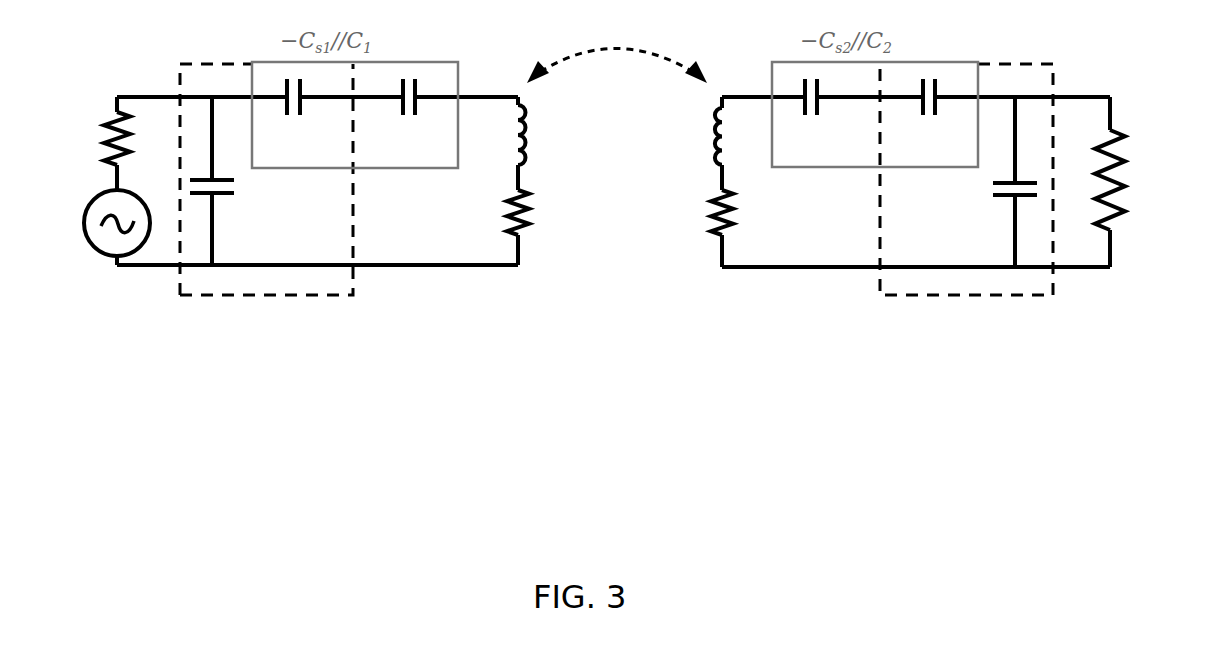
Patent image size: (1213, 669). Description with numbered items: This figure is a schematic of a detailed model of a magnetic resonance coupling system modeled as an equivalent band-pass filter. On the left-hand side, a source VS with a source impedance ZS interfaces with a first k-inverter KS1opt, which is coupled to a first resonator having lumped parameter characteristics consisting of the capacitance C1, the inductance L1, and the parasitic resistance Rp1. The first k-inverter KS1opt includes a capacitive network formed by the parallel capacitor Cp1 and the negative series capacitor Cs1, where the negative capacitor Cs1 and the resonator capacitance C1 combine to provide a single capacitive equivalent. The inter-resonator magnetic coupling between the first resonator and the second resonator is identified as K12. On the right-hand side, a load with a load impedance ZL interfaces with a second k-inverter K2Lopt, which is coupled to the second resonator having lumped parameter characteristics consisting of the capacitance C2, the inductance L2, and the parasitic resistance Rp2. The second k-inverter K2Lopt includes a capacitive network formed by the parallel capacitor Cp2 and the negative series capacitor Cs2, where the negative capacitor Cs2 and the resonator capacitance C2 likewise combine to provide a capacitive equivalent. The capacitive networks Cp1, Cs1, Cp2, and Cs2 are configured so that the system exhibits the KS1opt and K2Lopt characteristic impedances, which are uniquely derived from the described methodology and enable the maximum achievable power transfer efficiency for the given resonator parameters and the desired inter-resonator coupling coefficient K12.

The source impedance ZS is at (81, 140).
The source VS is at (89, 223).
The capacitor Cp1 of the first k-inverter capacitive network Cp1 is at (238, 181).
The negative capacitor -Cs1 of the first k-inverter capacitive network Cs1 is at (296, 120).
The capacitance C1 of the first resonator C1 is at (422, 118).
The inductance L1 of the first resonator L1 is at (501, 135).
The parasitic resistance Rp1 of the first resonator Rp1 is at (485, 212).
The first k-inverter KS1opt is at (258, 332).
The inter-resonator magnetic coupling K12 is at (617, 41).
The inductance L2 of the second resonator L2 is at (742, 136).
The parasitic resistance Rp2 of the second resonator Rp2 is at (748, 213).
The capacitance C2 of the second resonator C2 is at (807, 119).
The negative capacitor -Cs2 of the second k-inverter capacitive network Cs2 is at (920, 120).
The capacitor Cp2 of the second k-inverter capacitive network Cp2 is at (988, 182).
The load impedance ZL is at (1133, 180).
The second k-inverter K2Lopt is at (961, 332).